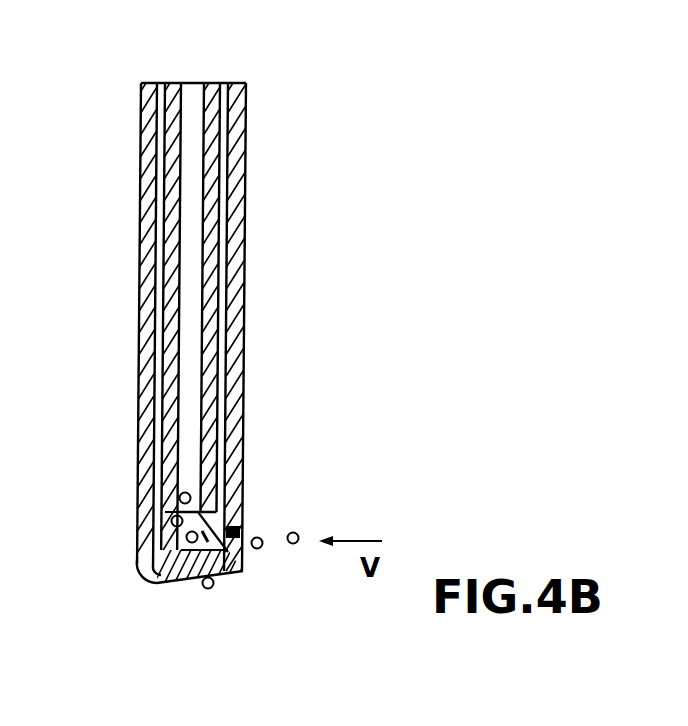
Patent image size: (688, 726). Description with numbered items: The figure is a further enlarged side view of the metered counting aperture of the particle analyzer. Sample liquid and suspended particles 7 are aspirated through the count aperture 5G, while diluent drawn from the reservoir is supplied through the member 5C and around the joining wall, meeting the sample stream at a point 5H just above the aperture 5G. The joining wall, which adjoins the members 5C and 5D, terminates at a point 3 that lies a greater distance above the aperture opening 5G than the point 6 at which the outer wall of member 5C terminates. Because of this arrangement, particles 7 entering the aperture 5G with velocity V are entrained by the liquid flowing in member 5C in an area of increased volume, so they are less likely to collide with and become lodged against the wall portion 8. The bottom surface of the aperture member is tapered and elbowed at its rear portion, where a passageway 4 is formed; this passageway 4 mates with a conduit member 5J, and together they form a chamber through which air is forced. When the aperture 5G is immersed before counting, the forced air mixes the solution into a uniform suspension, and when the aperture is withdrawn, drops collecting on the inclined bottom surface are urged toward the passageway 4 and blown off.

The conduit member 5J is at (163, 87).
The member 5D is at (200, 86).
The inner wall a is at (215, 86).
The member 5C is at (229, 86).
The particles 7 is at (245, 302).
The point 5H is at (221, 545).
The point 3 is at (172, 512).
The point 6 is at (242, 532).
The wall portion 8 is at (140, 557).
The passageway 4 is at (158, 584).
The aperture 5G is at (231, 573).